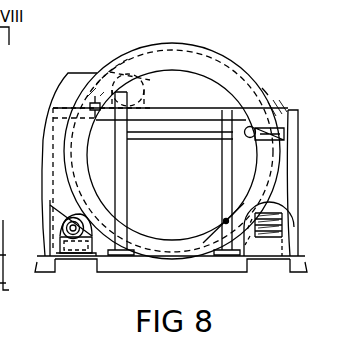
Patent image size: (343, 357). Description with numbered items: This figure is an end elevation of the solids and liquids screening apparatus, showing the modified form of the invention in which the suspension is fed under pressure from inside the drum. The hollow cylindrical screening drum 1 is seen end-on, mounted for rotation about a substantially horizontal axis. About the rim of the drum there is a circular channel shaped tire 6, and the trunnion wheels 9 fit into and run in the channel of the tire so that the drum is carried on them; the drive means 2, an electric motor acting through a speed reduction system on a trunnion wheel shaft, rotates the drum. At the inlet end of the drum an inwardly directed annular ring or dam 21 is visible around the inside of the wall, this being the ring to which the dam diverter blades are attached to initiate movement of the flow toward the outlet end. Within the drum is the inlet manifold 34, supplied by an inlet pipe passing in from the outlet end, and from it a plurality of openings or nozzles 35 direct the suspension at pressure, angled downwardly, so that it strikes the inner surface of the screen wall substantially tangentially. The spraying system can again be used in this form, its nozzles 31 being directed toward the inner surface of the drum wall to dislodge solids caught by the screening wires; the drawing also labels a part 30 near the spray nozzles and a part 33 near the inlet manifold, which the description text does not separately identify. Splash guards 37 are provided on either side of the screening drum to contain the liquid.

The screening drum 1 is at (259, 55).
The drive means 2 is at (288, 222).
The channel shaped tire 6 is at (262, 90).
The trunnion wheel 9 is at (62, 229).
The annular ring or dam 21 is at (190, 70).
The roller 30 is at (256, 128).
The nozzles 31 is at (284, 134).
The ring 33 is at (108, 62).
The inlet manifold 34 is at (128, 74).
The openings or nozzles 35 is at (90, 107).
The splash guards 37 is at (43, 140).